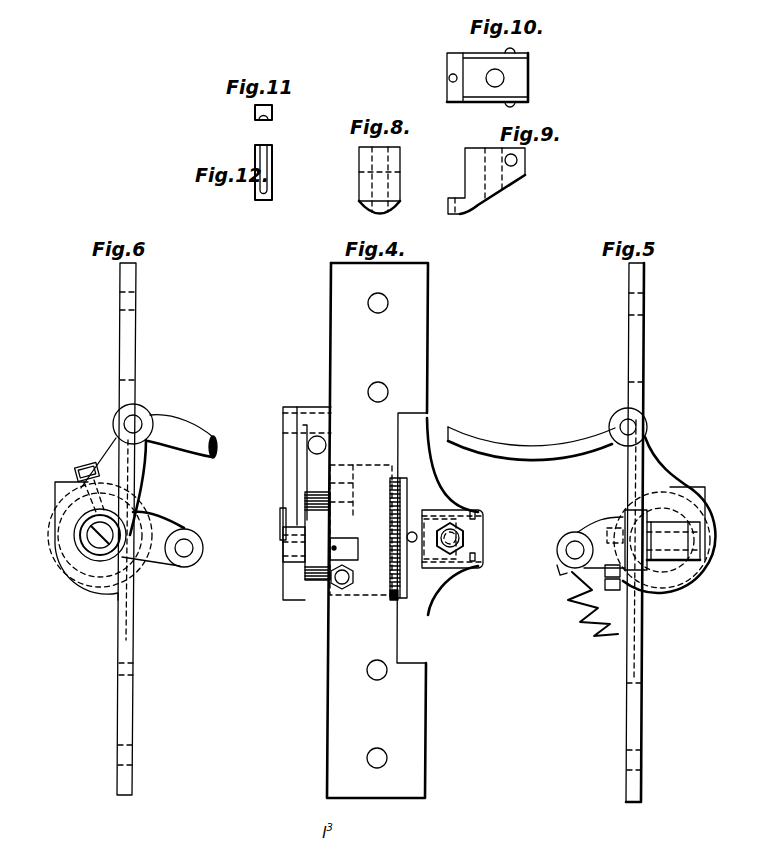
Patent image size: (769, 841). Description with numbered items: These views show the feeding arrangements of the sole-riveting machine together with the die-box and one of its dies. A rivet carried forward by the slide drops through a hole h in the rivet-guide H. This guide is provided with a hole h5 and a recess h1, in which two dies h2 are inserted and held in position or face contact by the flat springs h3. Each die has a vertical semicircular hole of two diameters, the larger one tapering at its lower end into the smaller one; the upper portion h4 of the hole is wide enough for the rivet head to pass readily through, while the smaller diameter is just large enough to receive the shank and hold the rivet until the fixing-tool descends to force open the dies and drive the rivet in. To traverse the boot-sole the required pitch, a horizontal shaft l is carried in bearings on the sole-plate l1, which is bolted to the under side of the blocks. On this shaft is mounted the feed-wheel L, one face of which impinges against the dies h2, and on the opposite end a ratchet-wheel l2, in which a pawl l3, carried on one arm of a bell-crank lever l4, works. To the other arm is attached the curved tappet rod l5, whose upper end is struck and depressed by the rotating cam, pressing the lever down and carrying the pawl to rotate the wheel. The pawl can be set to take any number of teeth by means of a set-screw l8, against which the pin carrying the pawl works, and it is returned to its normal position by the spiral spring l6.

In FIG. 6, the horizontal shaft l is at (82, 536).
In FIG. 4, the horizontal shaft l is at (290, 540).
In FIG. 5, the horizontal shaft l is at (637, 735).
In FIG. 6, the sole-plate l1 is at (137, 345).
In FIG. 4, the sole-plate l1 is at (402, 530).
In FIG. 5, the sole-plate l1 is at (644, 345).
In FIG. 6, the ratchet-wheel l2 is at (140, 580).
In FIG. 4, the ratchet-wheel l2 is at (318, 582).
In FIG. 5, the ratchet-wheel l2 is at (705, 572).
In FIG. 6, the pawl l3 is at (168, 515).
In FIG. 4, the pawl l3 is at (330, 532).
In FIG. 5, the pawl l3 is at (602, 530).
In FIG. 6, the bell-crank lever l4 is at (196, 548).
In FIG. 4, the bell-crank lever l4 is at (296, 500).
In FIG. 5, the bell-crank lever l4 is at (565, 563).
In FIG. 6, the curved tappet rod l5 is at (165, 431).
In FIG. 4, the curved tappet rod l5 is at (322, 405).
In FIG. 5, the spiral spring l6 is at (589, 610).
In FIG. 5, the set-screw l8 is at (625, 600).
In FIG. 6, the feed-wheel L is at (142, 507).
In FIG. 4, the feed-wheel L is at (395, 602).
In FIG. 5, the feed-wheel L is at (665, 490).
In FIG. 4, the hole in rivet-guide h is at (412, 542).
In FIG. 8, the recess h1 is at (359, 185).
In FIG. 9, the recess h1 is at (465, 172).
In FIG. 4, the die h2 is at (430, 515).
In FIG. 5, the die h2 is at (705, 527).
In FIG. 10, the die h2 is at (447, 70).
In FIG. 11, the die h2 is at (272, 112).
In FIG. 12, the die h2 is at (272, 186).
In FIG. 4, the flat spring h3 is at (482, 520).
In FIG. 5, the flat spring h3 is at (700, 515).
In FIG. 10, the flat spring h3 is at (447, 57).
In FIG. 12, the upper portion of die hole h4 is at (258, 186).
In FIG. 8, the hole in rivet-guide h5 is at (378, 210).
In FIG. 9, the hole in rivet-guide h5 is at (452, 216).
In FIG. 4, the rivet-guide H is at (452, 539).
In FIG. 10, the rivet-guide H is at (520, 78).
In FIG. 8, the rivet-guide H is at (400, 160).
In FIG. 9, the rivet-guide H is at (508, 178).